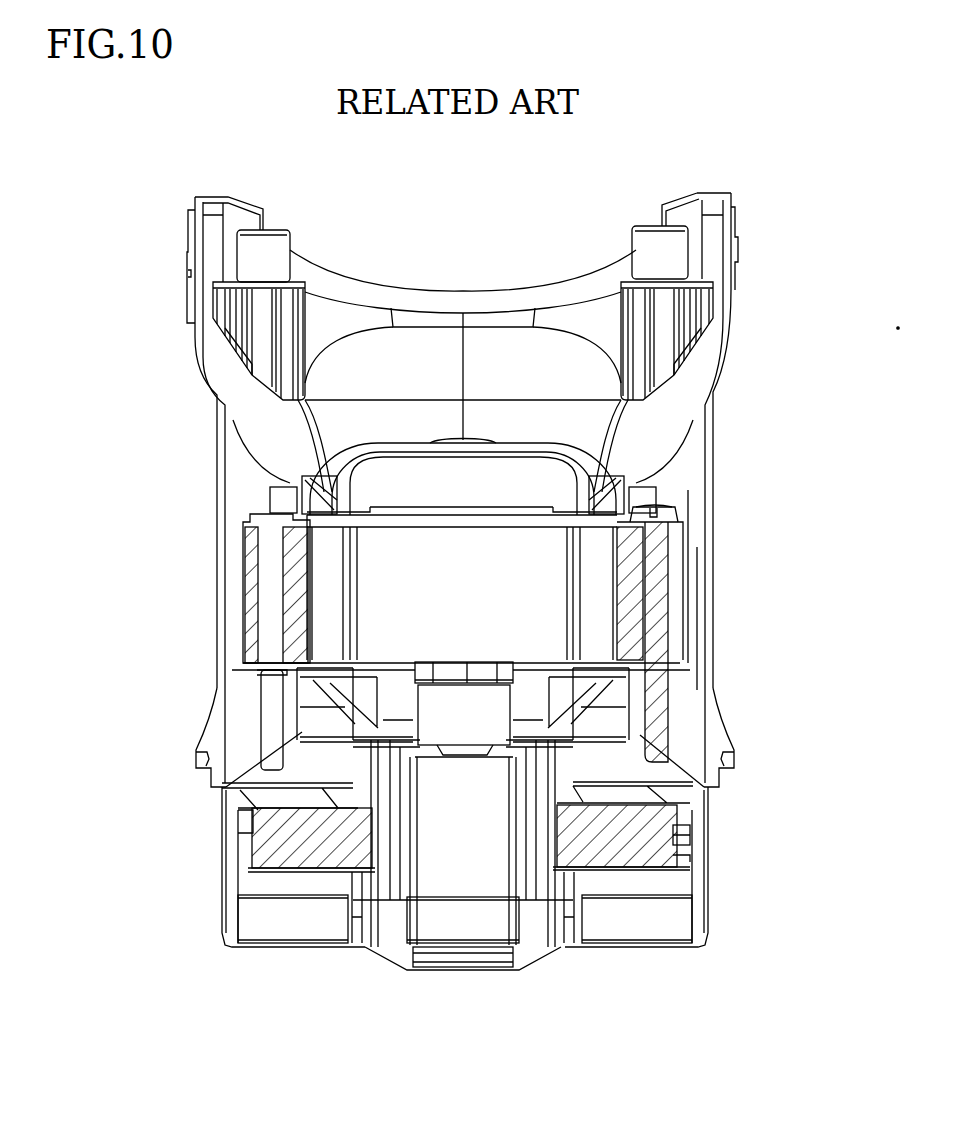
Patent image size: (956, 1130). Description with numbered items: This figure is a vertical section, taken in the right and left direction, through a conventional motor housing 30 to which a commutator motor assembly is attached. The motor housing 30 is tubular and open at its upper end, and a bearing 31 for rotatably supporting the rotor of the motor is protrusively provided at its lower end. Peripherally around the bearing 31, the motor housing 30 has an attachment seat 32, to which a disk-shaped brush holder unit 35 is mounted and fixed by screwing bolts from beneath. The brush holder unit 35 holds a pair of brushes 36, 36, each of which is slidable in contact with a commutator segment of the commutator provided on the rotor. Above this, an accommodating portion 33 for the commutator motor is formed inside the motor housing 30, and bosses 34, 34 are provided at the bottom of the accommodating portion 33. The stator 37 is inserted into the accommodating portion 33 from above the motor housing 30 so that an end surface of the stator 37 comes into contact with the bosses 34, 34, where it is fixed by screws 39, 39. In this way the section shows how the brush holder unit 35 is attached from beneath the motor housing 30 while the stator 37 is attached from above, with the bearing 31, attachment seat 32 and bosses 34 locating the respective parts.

The motor housing 30 is at (718, 463).
The bearing 31 is at (533, 950).
The attachment seat 32 is at (695, 822).
The accommodating portion 33 is at (694, 547).
The bosses 34 is at (253, 683).
The brush holder unit 35 is at (263, 797).
The brushes 36 is at (297, 852).
The stator 37 is at (253, 552).
The screws 39 is at (662, 503).